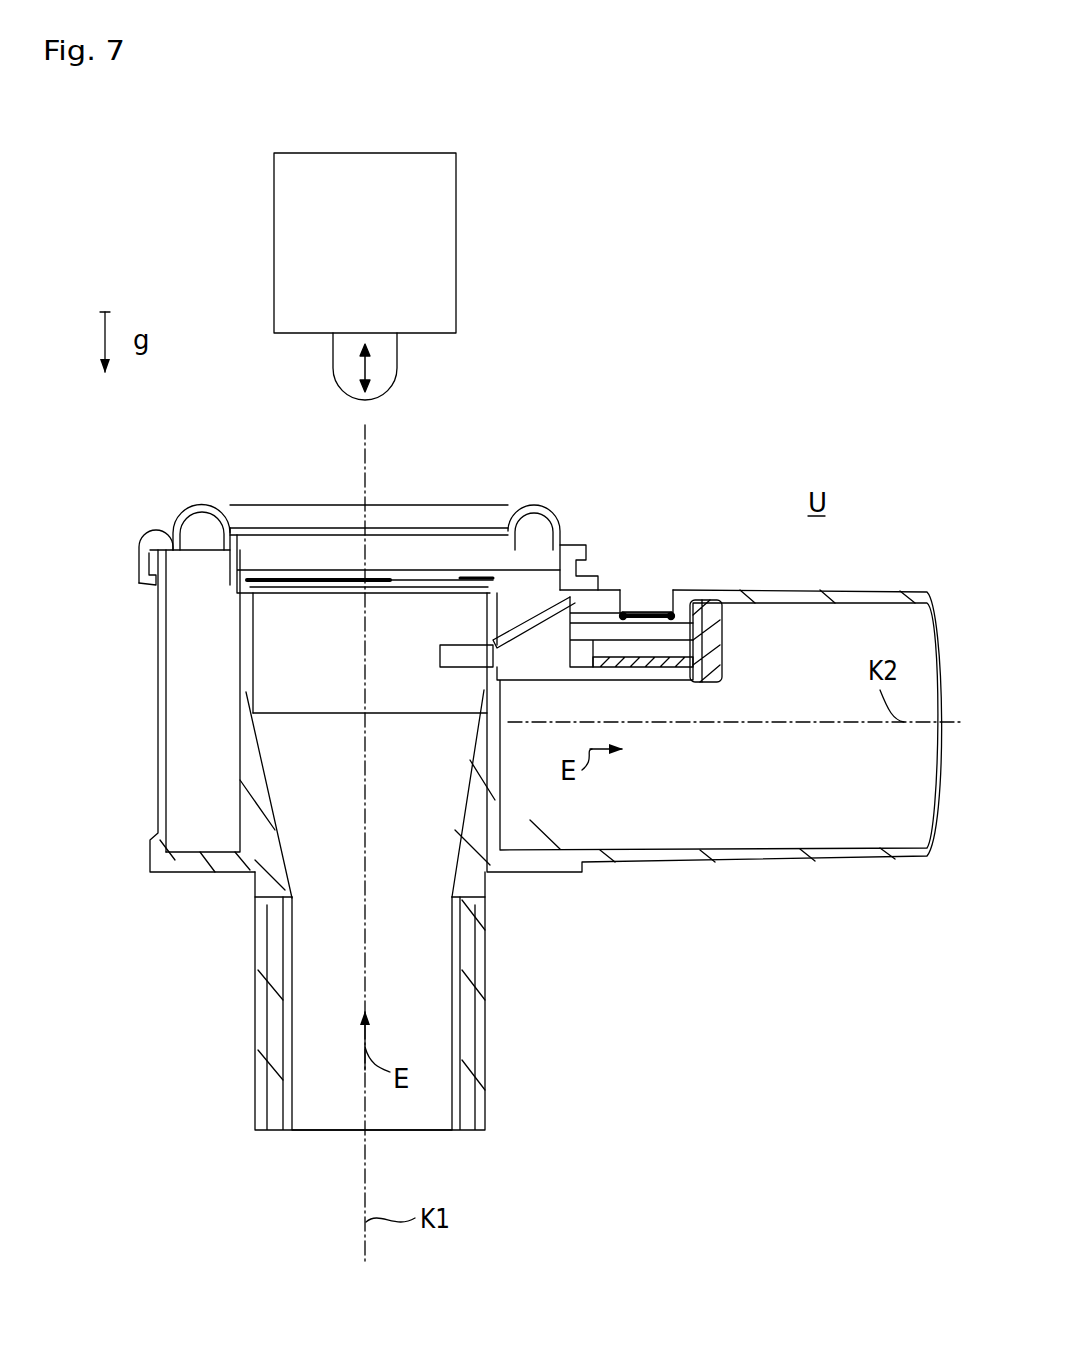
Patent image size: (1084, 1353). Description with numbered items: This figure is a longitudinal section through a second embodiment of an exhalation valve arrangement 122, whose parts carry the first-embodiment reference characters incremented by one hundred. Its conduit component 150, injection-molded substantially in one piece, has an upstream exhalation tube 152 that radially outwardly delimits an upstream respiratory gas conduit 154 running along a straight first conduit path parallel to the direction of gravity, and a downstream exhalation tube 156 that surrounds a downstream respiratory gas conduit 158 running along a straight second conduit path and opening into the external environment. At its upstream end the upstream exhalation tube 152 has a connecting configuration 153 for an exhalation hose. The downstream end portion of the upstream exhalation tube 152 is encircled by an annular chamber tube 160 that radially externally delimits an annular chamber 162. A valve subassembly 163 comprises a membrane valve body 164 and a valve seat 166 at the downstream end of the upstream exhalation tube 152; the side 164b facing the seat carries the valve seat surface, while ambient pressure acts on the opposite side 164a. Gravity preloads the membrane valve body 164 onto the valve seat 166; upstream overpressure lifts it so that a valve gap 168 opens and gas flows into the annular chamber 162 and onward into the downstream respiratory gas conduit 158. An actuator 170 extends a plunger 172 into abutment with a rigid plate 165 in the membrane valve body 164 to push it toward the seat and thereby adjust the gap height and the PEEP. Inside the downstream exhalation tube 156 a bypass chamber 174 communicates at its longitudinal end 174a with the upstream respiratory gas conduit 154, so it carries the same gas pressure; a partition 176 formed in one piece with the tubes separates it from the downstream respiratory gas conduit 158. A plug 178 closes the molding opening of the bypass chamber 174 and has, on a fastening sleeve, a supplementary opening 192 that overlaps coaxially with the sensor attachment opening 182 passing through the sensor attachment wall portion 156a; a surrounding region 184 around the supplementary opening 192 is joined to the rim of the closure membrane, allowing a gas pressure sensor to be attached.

The exhalation valve arrangement 122 is at (585, 164).
The conduit component 150 is at (120, 628).
The upstream exhalation tube 152 is at (470, 995).
The connecting configuration 153 is at (465, 1133).
The upstream respiratory gas conduit 154 is at (421, 957).
The downstream exhalation tube 156 is at (683, 853).
The sensor attachment wall portion 156a is at (667, 580).
The downstream respiratory gas conduit 158 is at (725, 801).
The annular chamber tube 160 is at (162, 750).
The annular chamber 162 is at (232, 710).
The valve subassembly 163 is at (200, 488).
The membrane valve body 164 is at (397, 507).
The side of membrane valve body facing away from valve seat 164a is at (323, 568).
The side of membrane valve body facing toward valve seat 164b is at (347, 598).
The rigid plate 165 is at (347, 577).
The valve seat 166 is at (252, 596).
The valve gap 168 is at (238, 598).
The actuator 170 is at (389, 257).
The plunger 172 is at (408, 362).
The bypass chamber 174 is at (590, 660).
The longitudinal end of bypass chamber 174a is at (493, 647).
The partition 176 is at (603, 660).
The plug 178 is at (700, 633).
The sensor attachment opening 182 is at (627, 584).
The surrounding region 184 is at (648, 613).
The supplementary opening 192 is at (640, 606).